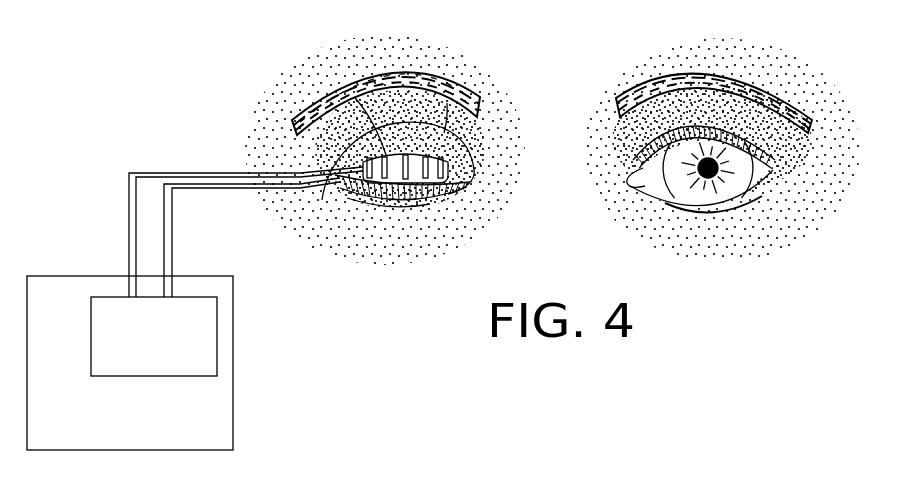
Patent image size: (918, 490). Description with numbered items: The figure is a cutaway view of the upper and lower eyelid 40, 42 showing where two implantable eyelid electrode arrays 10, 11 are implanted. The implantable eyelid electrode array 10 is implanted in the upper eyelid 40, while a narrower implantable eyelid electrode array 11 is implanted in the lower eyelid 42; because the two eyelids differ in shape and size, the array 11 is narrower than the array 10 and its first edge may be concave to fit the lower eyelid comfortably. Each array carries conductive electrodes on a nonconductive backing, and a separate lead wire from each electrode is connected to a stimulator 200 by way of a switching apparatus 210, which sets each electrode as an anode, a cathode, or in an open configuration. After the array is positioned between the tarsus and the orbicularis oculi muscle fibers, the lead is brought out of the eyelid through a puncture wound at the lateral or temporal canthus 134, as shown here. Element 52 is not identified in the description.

The implantable eyelid electrode array 10 is at (345, 92).
The implantable eyelid electrode array 11 is at (457, 322).
The upper eyelid 40 is at (475, 92).
The lower eyelid 42 is at (453, 187).
The electrodes 52 is at (400, 188).
The lateral or temporal canthus 134 is at (347, 192).
The stimulator 200 is at (233, 390).
The switching apparatus 210 is at (217, 343).